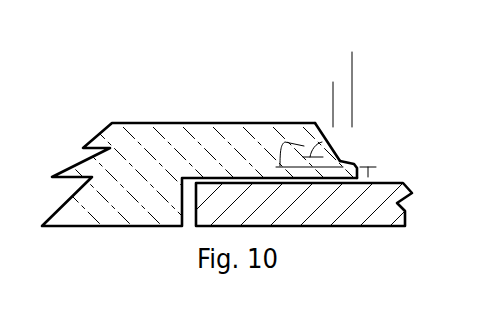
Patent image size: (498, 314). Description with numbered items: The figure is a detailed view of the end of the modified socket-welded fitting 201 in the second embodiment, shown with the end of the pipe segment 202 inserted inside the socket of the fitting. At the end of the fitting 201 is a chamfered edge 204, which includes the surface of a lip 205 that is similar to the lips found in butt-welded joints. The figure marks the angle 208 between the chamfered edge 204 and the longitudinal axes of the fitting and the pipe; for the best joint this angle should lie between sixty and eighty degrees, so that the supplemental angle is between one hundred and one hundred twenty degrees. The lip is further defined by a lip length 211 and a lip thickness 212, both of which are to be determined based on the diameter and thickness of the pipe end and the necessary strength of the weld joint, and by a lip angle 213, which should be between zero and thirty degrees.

The modified socket-welded fitting 201 is at (198, 133).
The pipe segment 202 is at (387, 192).
The chamfered edge 204 is at (323, 128).
The lip 205 is at (346, 167).
The angle 208 is at (305, 138).
The lip length 211 is at (353, 88).
The lip thickness 212 is at (368, 167).
The lip angle 213 is at (273, 159).